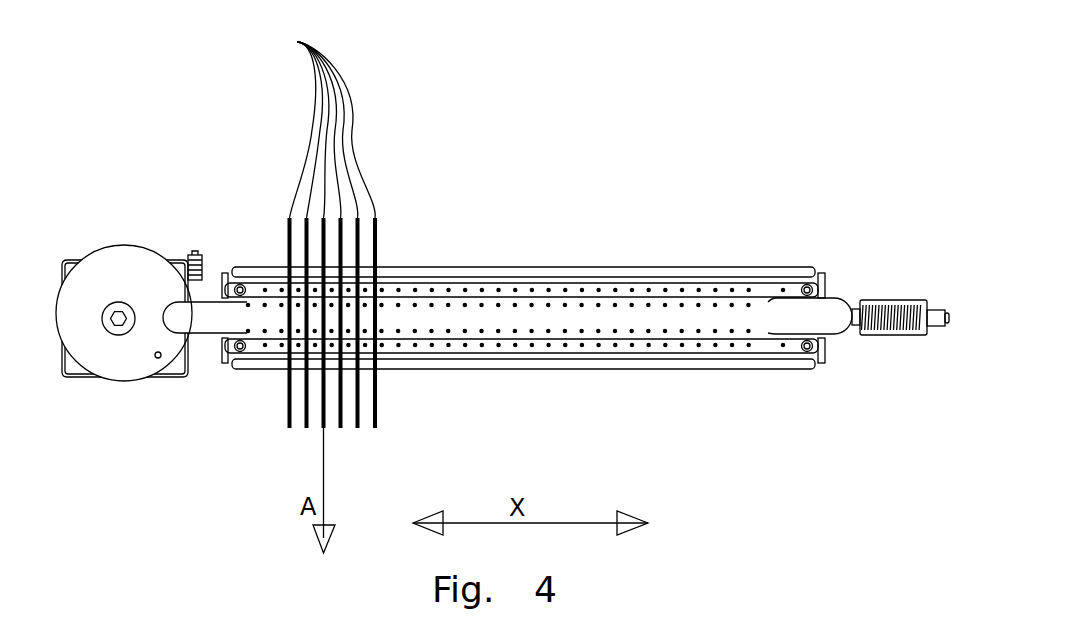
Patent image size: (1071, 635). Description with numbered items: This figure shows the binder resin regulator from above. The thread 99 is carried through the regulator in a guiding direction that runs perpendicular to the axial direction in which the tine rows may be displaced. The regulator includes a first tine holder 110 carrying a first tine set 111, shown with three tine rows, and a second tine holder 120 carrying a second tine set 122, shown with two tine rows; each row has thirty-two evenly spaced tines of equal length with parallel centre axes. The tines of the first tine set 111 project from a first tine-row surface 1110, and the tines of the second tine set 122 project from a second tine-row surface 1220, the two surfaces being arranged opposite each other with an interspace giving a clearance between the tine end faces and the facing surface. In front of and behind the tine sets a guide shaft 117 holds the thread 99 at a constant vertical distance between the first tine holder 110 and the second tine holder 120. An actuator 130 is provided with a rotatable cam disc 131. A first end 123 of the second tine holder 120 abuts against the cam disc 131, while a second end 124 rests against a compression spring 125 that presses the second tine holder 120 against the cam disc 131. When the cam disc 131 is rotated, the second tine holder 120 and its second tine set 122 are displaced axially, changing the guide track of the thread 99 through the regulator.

The thread 99 is at (297, 42).
The first tine holder 110 is at (608, 353).
The first tine set 111 is at (482, 343).
The first tine-row surface 1110 is at (740, 345).
The guide shaft 117 is at (730, 272).
The second tine holder 120 is at (605, 312).
The second tine-row surface 1220 is at (692, 315).
The second tine set 122 is at (482, 308).
The first end 123 is at (163, 318).
The second end 124 is at (857, 309).
The compression spring 125 is at (894, 303).
The actuator 130 is at (150, 377).
The cam disc 131 is at (112, 243).